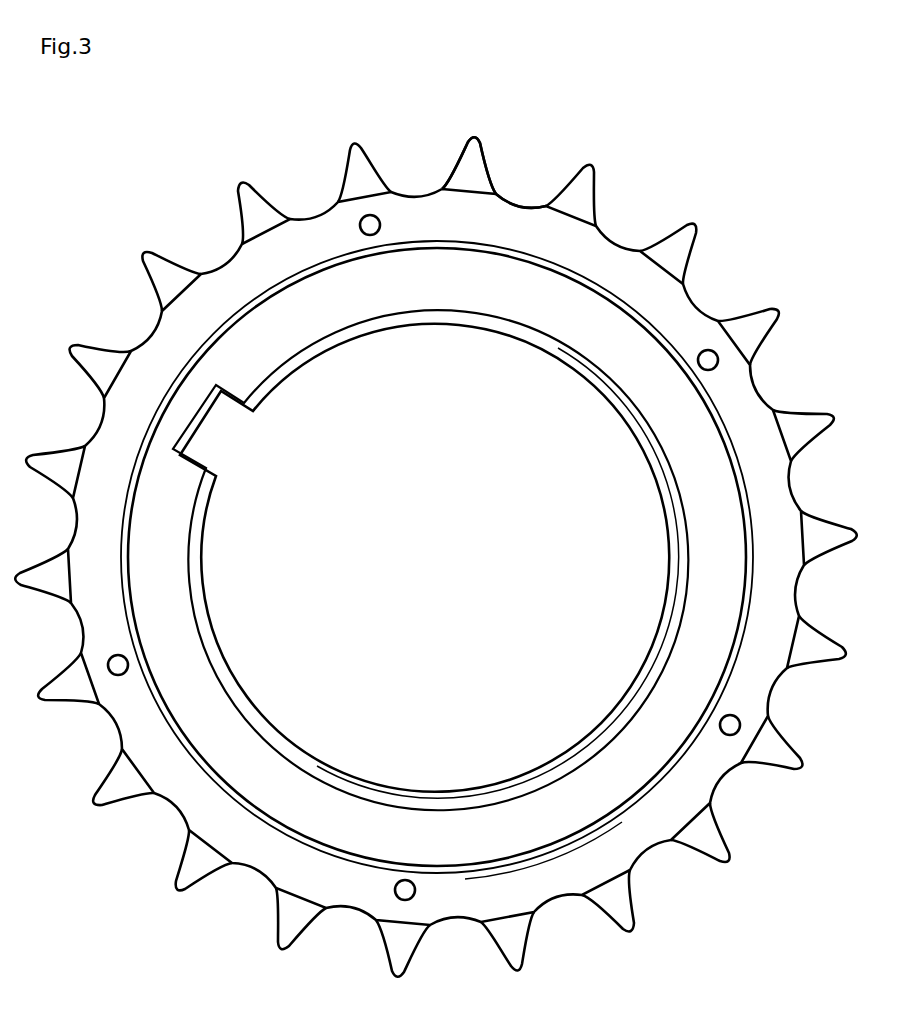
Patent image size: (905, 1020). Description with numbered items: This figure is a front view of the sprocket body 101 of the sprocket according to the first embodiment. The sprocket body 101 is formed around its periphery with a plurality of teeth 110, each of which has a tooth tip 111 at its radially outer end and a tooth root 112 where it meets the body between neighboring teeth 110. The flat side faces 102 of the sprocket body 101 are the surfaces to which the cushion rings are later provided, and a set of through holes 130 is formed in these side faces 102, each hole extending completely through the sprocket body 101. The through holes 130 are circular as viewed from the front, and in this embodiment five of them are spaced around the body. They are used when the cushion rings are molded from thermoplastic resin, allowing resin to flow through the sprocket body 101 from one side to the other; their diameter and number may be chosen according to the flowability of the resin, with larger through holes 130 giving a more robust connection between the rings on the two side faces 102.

The sprocket body 101 is at (248, 277).
The side faces 102 is at (647, 278).
The teeth 110 is at (547, 55).
The tooth tip 111 is at (474, 133).
The tooth root 112 is at (528, 200).
The through holes 130 is at (372, 216).